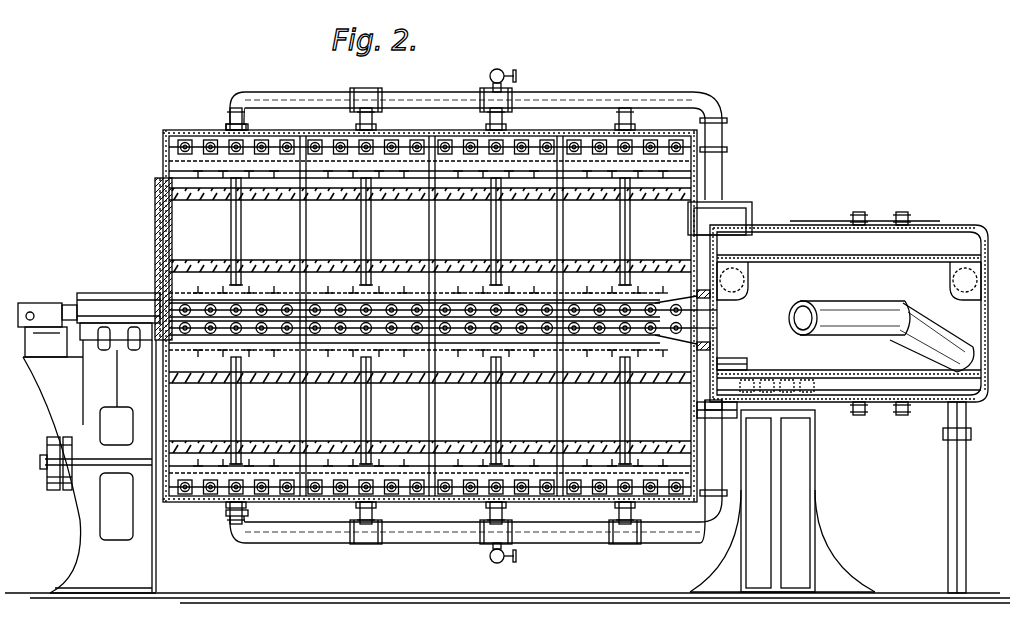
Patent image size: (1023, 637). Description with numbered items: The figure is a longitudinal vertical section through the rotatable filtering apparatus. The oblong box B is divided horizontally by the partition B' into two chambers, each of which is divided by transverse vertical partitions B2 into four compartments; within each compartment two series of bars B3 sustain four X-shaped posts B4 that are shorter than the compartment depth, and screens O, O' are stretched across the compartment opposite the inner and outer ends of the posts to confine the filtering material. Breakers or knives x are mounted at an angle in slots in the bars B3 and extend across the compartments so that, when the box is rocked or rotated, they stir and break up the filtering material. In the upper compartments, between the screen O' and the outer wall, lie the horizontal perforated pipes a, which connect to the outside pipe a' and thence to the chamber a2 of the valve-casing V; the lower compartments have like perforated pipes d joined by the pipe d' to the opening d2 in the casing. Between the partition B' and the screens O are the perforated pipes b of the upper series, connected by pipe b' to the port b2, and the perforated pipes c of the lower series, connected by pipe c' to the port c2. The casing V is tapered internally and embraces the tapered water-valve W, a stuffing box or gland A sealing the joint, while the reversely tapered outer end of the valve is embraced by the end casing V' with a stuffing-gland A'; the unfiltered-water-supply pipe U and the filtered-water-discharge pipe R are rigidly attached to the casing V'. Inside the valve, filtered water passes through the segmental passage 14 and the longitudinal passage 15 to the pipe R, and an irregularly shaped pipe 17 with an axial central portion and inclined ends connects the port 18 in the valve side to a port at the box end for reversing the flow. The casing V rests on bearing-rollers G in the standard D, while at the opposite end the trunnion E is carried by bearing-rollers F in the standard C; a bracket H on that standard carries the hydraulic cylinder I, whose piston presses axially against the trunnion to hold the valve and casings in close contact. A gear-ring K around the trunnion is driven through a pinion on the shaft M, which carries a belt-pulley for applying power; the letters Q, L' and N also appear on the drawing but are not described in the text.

The horizontal perforated pipes a is at (430, 299).
The pipe a' is at (490, 133).
The chamber a2 is at (720, 218).
The oblong box B is at (430, 311).
The partition B' is at (466, 348).
The transverse vertical partitions B2 is at (310, 240).
The bars B3 is at (410, 250).
The posts B4 is at (243, 220).
The valve Q is at (501, 68).
The perforated pipes d is at (430, 513).
The pipe d' is at (474, 482).
The opening d2 is at (724, 430).
The gear-ring K is at (155, 222).
The frame L' is at (424, 361).
The trunnion E is at (120, 292).
The hydraulic cylinder I is at (40, 308).
The bracket H is at (50, 378).
The bearing-rollers F is at (104, 350).
The standard C is at (116, 426).
The shaft M is at (118, 466).
The gear N is at (60, 487).
The screen O is at (425, 320).
The screen O' is at (430, 316).
The breakers or disintegrating-knives x is at (207, 198).
The perforated pipes b is at (330, 288).
The perforated pipes c is at (450, 351).
The pipe c' is at (636, 346).
The pipe b' is at (684, 305).
The port b2 is at (712, 306).
The port c2 is at (712, 324).
The valve-casing V is at (849, 301).
The end casing V' is at (880, 212).
The water-valve W is at (849, 246).
The unfiltered-water-supply pipe U is at (849, 281).
The stuffing box or gland A is at (856, 303).
The stuffing-gland A' is at (899, 303).
The passage or pipe 17 is at (850, 300).
The port 18 is at (905, 338).
The segmental passage 14 is at (742, 360).
The longitudinal passage 15 is at (849, 383).
The bearing-rollers G is at (812, 408).
The standard D is at (815, 470).
The filtered-water-discharge pipe R is at (945, 432).